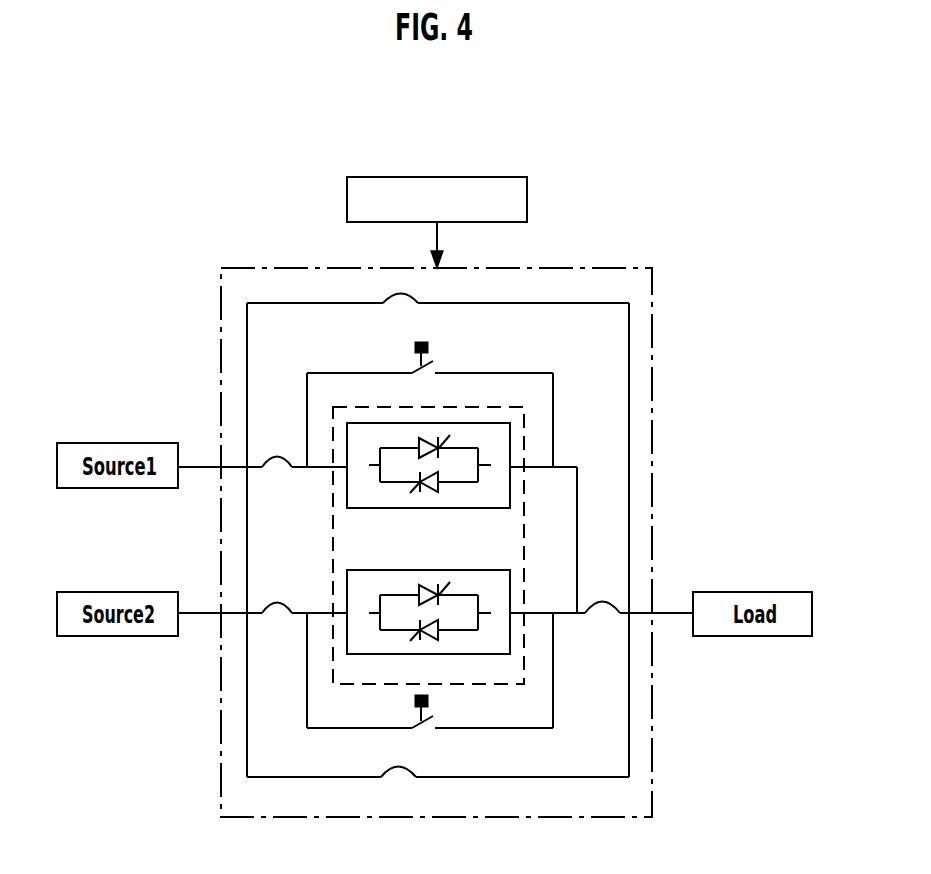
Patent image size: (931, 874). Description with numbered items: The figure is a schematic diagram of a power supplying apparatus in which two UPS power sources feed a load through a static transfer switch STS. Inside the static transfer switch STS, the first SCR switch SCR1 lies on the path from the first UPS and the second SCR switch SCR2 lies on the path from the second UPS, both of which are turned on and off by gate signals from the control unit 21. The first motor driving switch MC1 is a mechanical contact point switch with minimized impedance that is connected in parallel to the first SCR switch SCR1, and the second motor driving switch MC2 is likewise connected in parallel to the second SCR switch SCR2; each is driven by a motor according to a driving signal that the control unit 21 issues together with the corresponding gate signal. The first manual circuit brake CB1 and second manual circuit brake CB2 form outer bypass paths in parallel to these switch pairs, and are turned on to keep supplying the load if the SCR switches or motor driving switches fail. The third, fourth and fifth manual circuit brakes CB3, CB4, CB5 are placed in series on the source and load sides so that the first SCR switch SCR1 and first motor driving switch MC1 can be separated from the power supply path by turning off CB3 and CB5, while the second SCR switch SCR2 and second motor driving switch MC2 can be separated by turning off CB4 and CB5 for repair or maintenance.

The control unit 21 is at (467, 177).
The static transfer switch STS is at (436, 562).
The first manual circuit brake CB1 is at (400, 316).
The second manual circuit brake CB2 is at (399, 788).
The third manual circuit brake CB3 is at (276, 479).
The fourth manual circuit brake CB4 is at (276, 626).
The fifth manual circuit brake CB5 is at (602, 625).
The first motor driving switch MC1 is at (428, 373).
The second motor driving switch MC2 is at (428, 727).
The first SCR switch SCR1 is at (428, 481).
The second SCR switch SCR2 is at (428, 628).